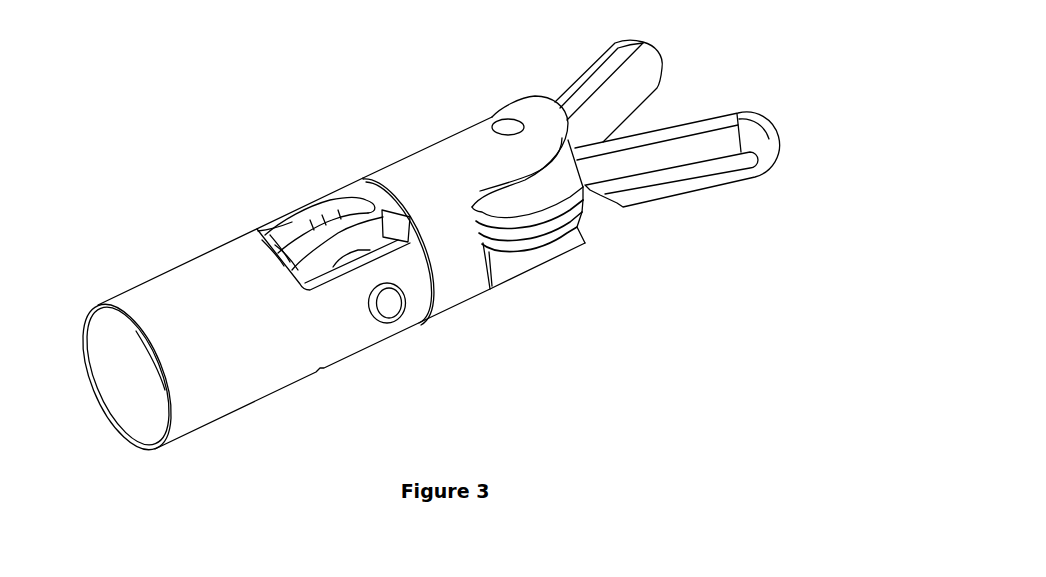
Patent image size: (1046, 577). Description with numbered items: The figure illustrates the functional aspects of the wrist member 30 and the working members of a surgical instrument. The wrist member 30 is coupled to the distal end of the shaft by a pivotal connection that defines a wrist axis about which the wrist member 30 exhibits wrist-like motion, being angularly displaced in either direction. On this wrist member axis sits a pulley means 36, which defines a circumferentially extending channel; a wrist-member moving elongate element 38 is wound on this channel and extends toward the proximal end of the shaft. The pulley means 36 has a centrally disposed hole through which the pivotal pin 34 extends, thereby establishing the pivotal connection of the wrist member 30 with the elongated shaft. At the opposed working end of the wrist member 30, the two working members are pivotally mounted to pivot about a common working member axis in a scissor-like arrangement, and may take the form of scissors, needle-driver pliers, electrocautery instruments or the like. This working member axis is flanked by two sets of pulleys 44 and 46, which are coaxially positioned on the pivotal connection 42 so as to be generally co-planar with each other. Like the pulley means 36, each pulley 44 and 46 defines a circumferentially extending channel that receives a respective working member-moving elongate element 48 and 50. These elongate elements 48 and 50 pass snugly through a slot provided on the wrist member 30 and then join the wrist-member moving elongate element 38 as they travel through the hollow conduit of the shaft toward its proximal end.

The wrist member 30 is at (467, 277).
The pivotal pin 34 is at (392, 310).
The pulley means 36 is at (300, 243).
The wrist-member moving elongate element 38 is at (298, 243).
The pivotal connection 42 is at (503, 124).
The pulley 44 is at (498, 197).
The pulley 46 is at (550, 243).
The working member-moving elongate element 48 is at (573, 201).
The working member-moving elongate element 50 is at (563, 225).